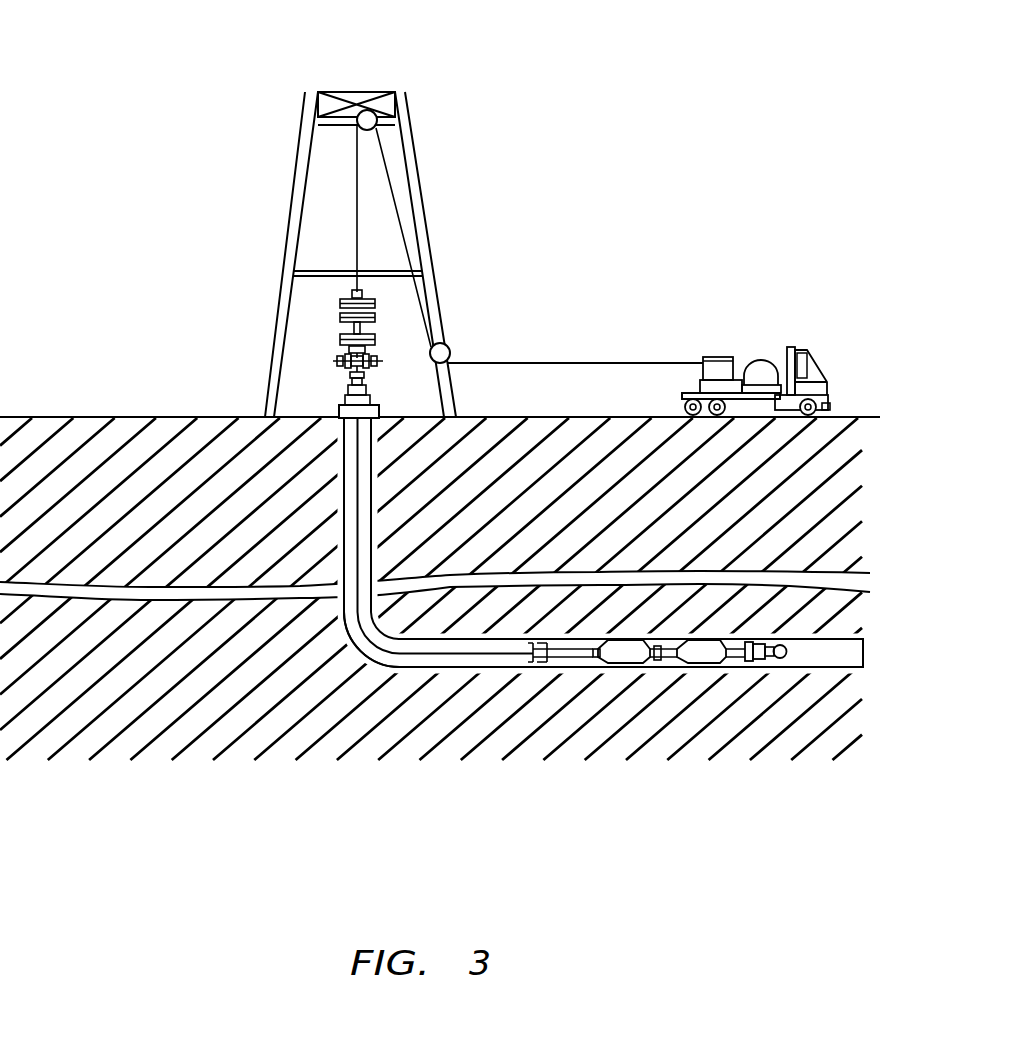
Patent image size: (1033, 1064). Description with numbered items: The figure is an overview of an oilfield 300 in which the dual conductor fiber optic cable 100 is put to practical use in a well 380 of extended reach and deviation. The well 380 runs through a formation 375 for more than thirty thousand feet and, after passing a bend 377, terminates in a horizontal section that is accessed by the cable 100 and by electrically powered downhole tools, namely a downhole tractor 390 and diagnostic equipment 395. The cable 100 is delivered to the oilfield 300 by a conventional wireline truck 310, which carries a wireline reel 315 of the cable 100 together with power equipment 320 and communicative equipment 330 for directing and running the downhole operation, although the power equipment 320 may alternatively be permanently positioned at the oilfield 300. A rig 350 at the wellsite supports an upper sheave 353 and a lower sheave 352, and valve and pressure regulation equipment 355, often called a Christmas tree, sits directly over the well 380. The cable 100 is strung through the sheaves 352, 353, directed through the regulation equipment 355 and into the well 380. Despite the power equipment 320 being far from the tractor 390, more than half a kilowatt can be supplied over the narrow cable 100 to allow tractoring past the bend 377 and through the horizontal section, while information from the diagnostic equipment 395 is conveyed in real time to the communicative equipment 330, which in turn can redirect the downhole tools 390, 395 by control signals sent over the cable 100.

The dual conductor fiber optic cable 100 is at (549, 362).
The oilfield 300 is at (70, 404).
The wireline truck 310 is at (802, 321).
The wireline reel 315 is at (762, 361).
The power equipment 320 is at (703, 383).
The communicative equipment 330 is at (712, 357).
The rig 350 is at (143, 45).
The lower sheave 352 is at (449, 348).
The upper sheave 353 is at (367, 110).
The valve and pressure regulation equipment 355 is at (323, 318).
The formation 375 is at (155, 519).
The bend 377 is at (360, 655).
The well 380 is at (354, 440).
The downhole tractor 390 is at (663, 664).
The diagnostic equipment 395 is at (761, 664).